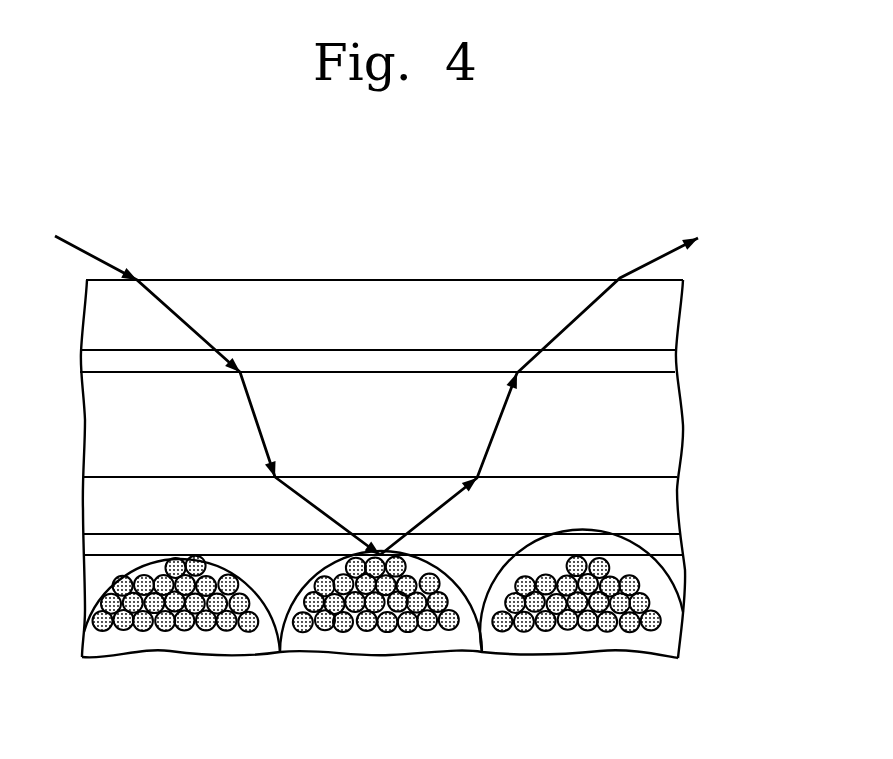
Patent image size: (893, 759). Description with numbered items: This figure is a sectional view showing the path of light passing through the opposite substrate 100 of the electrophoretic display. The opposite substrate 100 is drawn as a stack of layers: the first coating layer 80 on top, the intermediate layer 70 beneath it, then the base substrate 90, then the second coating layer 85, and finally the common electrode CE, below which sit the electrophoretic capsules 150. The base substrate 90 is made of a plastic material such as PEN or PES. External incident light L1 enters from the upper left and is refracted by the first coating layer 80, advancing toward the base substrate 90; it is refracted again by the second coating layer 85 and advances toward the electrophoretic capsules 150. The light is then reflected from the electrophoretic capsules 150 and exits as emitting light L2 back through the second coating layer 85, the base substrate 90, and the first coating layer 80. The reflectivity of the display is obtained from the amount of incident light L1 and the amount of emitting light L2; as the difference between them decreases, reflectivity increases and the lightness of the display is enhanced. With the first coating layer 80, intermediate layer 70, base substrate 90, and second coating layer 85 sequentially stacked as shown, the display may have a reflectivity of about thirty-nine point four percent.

The opposite substrate 100 is at (778, 309).
The first coating layer 80 is at (667, 317).
The intermediate layer 70 is at (661, 361).
The base substrate 90 is at (665, 427).
The second coating layer 85 is at (660, 505).
The common electrode CE is at (660, 549).
The electrophoretic capsules 150 is at (375, 638).
The incident light L1 is at (93, 246).
The emitting light L2 is at (662, 260).